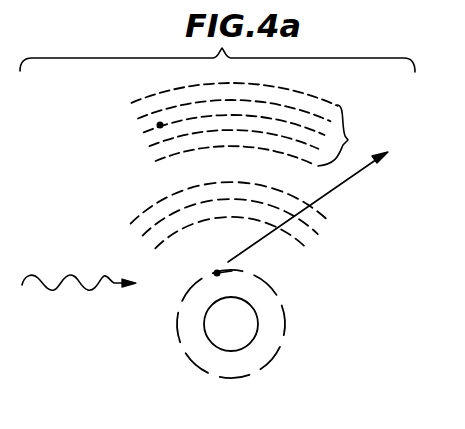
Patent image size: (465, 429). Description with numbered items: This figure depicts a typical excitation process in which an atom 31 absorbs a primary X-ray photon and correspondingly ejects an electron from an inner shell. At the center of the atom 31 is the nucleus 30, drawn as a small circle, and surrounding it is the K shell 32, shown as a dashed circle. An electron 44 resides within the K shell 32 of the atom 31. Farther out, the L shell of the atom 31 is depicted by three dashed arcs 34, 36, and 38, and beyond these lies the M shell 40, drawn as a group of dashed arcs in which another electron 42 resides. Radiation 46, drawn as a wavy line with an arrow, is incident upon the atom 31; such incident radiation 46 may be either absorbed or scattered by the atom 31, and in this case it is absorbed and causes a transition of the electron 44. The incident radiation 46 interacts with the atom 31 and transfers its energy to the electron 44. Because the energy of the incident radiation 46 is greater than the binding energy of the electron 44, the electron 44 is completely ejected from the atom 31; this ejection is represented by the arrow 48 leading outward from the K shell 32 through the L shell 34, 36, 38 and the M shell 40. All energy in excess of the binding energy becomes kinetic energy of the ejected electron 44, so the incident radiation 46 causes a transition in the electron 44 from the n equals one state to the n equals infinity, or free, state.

The nucleus 30 is at (246, 338).
The atom 31 is at (133, 381).
The K shell 32 is at (279, 349).
The L shell 34 is at (305, 248).
The L shell 36 is at (318, 236).
The L shell 38 is at (331, 221).
The M shell 40 is at (347, 142).
The electron 42 is at (158, 125).
The electron 44 is at (214, 273).
The incident radiation 46 is at (76, 288).
The ejection 48 is at (352, 177).